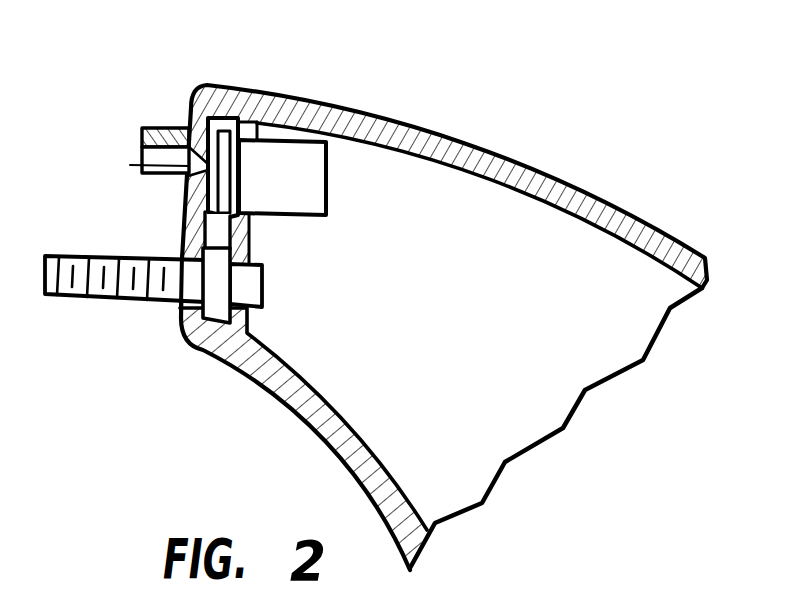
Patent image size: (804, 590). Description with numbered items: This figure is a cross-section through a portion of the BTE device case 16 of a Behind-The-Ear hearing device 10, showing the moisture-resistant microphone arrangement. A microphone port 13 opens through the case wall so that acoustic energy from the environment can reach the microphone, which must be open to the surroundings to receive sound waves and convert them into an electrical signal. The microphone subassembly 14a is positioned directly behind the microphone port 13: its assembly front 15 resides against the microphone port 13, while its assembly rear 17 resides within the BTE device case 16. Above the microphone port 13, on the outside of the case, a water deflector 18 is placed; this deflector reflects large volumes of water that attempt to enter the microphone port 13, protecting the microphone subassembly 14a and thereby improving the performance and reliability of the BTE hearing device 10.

The BTE hearing device 10 is at (462, 297).
The microphone port 13 is at (195, 166).
The microphone subassembly 14a is at (288, 163).
The assembly front 15 is at (171, 178).
The BTE device case 16 is at (455, 152).
The assembly rear 17 is at (327, 183).
The water deflector 18 is at (140, 142).